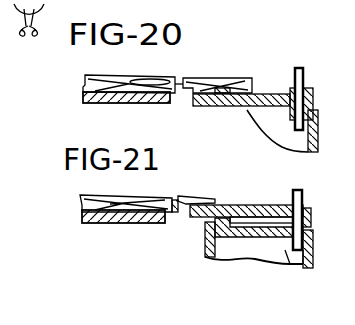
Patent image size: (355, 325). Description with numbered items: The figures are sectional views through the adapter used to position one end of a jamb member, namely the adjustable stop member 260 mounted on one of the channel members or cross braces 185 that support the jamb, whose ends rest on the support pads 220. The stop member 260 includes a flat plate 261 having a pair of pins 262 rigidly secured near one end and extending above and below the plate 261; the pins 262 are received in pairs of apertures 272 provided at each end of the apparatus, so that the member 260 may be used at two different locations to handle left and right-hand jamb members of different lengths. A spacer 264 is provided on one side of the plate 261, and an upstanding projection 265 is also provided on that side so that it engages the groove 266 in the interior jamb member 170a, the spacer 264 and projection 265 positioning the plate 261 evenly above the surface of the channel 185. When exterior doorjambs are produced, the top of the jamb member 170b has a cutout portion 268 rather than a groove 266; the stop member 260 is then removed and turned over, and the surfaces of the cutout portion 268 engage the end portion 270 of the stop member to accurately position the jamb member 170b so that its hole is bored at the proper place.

In FIG. 20, the interior jamb member 170a is at (115, 81).
In FIG. 21, the jamb member 170b is at (183, 198).
In FIG. 20, the support pad 220 is at (107, 102).
In FIG. 21, the support pad 220 is at (98, 225).
In FIG. 20, the flat plate 261 is at (191, 100).
In FIG. 20, the groove 266 is at (214, 87).
In FIG. 20, the upstanding projection 265 is at (221, 101).
In FIG. 20, the spacer 264 is at (291, 90).
In FIG. 20, the pin 262 is at (299, 67).
In FIG. 20, the cross brace 185 is at (281, 141).
In FIG. 21, the cross brace 185 is at (268, 259).
In FIG. 21, the adjustable stop member 260 is at (255, 203).
In FIG. 21, the cutout portion 268 is at (196, 219).
In FIG. 21, the end portion 270 is at (199, 224).
In FIG. 21, the aperture 272 is at (283, 262).